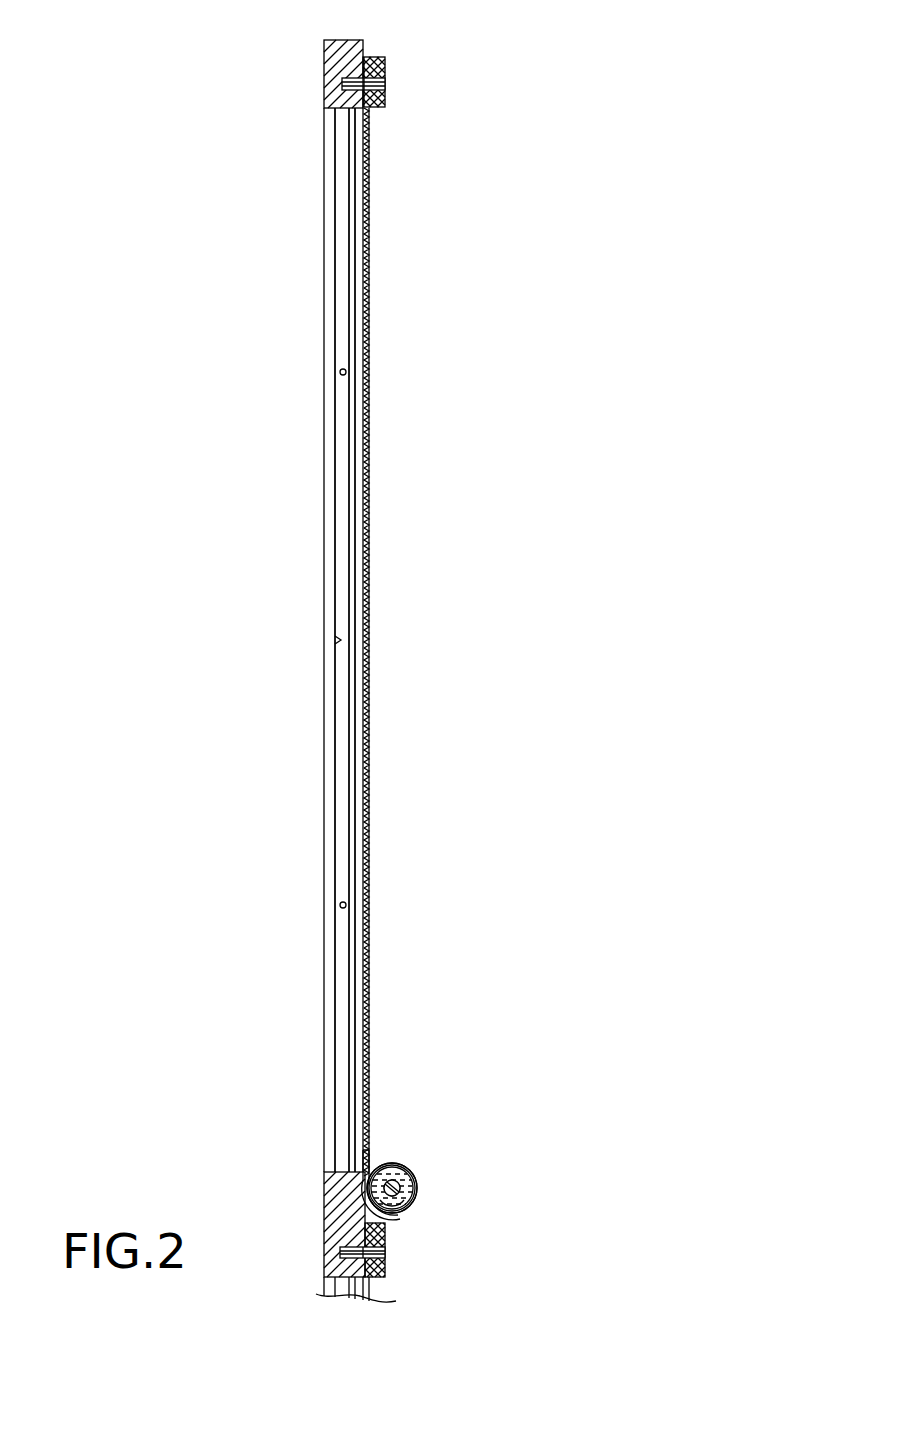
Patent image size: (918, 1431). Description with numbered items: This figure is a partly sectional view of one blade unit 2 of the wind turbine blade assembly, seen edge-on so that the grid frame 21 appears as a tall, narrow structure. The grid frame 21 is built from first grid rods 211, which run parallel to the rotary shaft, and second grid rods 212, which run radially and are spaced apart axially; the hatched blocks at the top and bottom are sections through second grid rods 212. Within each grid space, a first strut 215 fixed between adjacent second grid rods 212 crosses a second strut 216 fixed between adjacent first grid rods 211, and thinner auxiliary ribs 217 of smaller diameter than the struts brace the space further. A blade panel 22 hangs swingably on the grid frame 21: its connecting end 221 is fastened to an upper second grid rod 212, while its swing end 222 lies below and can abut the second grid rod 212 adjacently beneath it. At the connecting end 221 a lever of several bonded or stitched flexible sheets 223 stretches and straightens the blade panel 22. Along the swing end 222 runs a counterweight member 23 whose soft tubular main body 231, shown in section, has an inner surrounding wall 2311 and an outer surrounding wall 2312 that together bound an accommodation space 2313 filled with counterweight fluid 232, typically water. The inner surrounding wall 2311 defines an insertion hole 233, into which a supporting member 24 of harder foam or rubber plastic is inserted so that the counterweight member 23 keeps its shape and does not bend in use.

The blade unit 2 is at (278, 240).
The grid frame 21 is at (322, 179).
The first grid rod 211 is at (330, 318).
The second grid rod 212 is at (333, 68).
The first strut 215 is at (350, 437).
The second strut 216 is at (338, 640).
The auxiliary rib 217 is at (345, 370).
The blade panel 22 is at (374, 701).
The connecting end 221 is at (370, 112).
The swing end 222 is at (384, 1162).
The flexible sheet 223 is at (374, 57).
The counterweight member 23 is at (420, 1199).
The main body 231 is at (410, 1167).
The inner surrounding wall 2311 is at (390, 1164).
The outer surrounding wall 2312 is at (402, 1168).
The accommodation space 2313 is at (420, 1190).
The counterweight fluid 232 is at (415, 1176).
The insertion hole 233 is at (407, 1207).
The supporting member 24 is at (392, 1200).